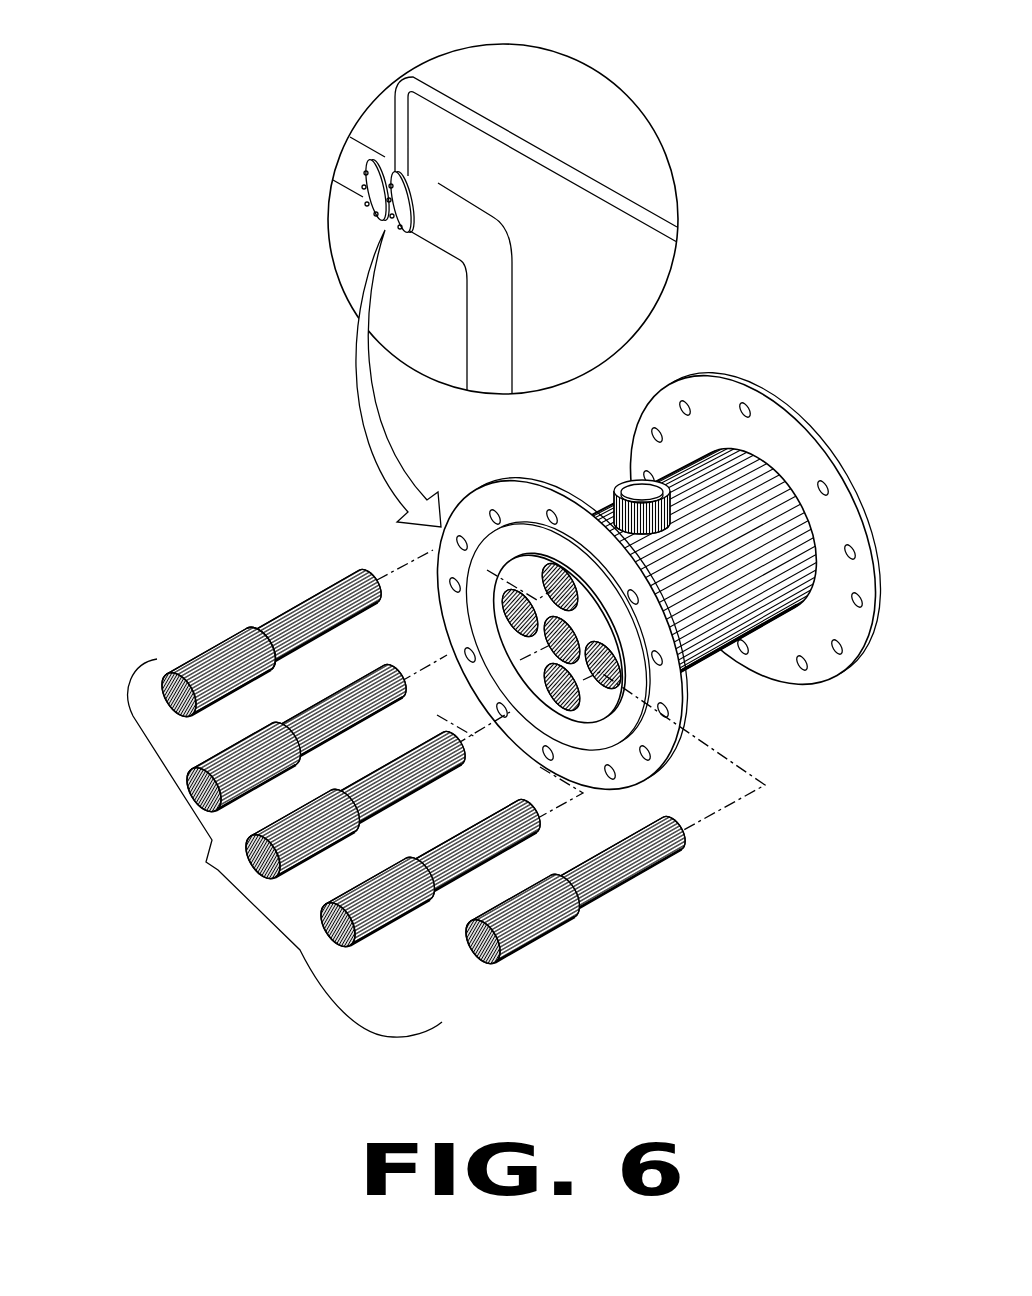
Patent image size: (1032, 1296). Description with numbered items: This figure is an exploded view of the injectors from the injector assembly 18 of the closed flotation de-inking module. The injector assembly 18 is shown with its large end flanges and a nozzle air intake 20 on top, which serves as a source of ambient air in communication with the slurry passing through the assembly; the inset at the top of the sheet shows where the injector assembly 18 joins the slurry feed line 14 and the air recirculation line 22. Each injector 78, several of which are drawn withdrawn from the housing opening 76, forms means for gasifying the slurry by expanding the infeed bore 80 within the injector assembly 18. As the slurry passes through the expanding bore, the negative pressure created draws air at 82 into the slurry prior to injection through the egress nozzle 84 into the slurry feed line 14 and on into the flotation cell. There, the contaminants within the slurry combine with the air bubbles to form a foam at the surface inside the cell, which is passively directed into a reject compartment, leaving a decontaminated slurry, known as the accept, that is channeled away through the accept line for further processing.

The feed line 14 is at (345, 172).
The injector assembly 18 is at (635, 423).
The injector air intake port 20 is at (628, 474).
The air recirculation line 22 is at (598, 185).
The opening of housing 76 is at (522, 568).
The injector 78 is at (402, 781).
The infeed bore 80 is at (402, 747).
The air draw point 82 is at (258, 624).
The egress nozzle 84 is at (318, 592).